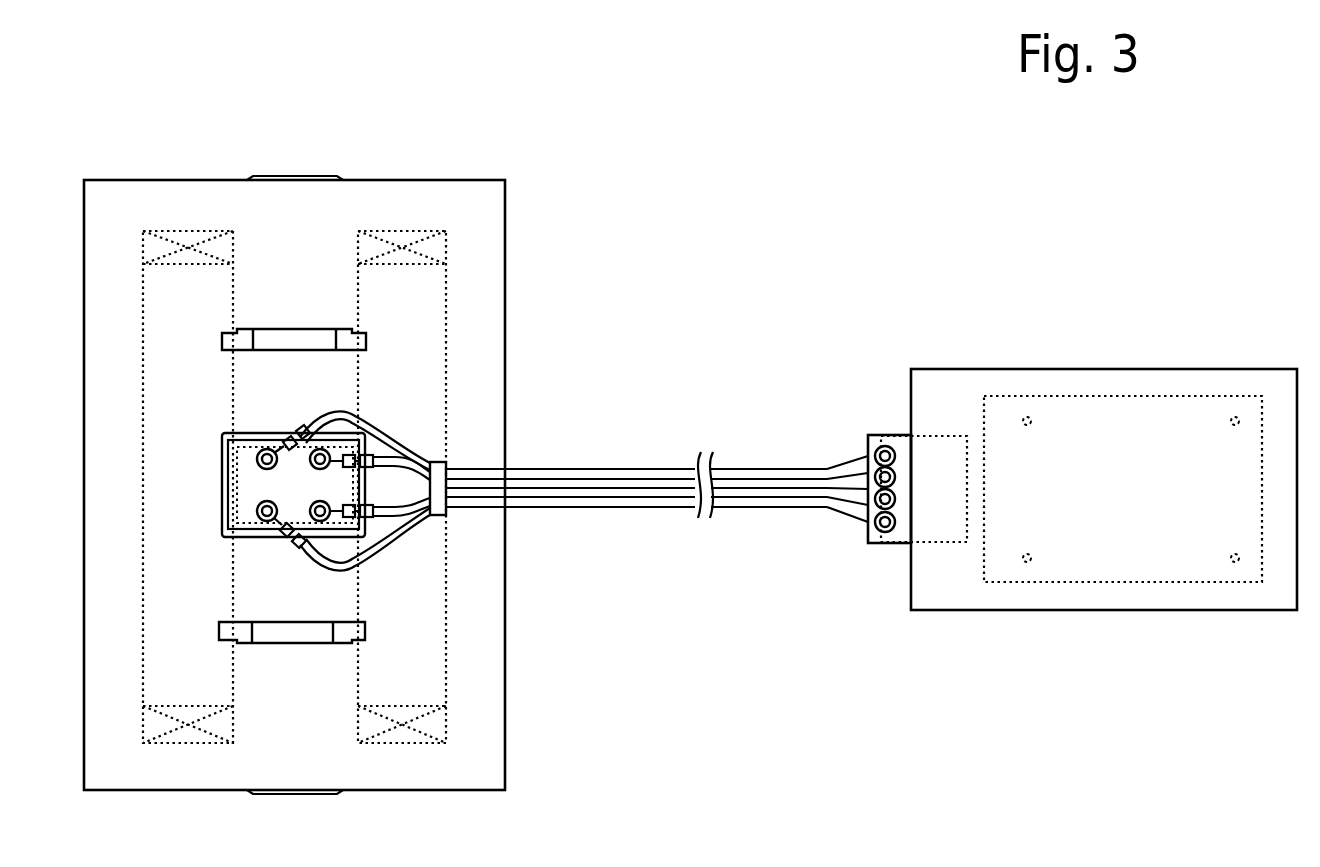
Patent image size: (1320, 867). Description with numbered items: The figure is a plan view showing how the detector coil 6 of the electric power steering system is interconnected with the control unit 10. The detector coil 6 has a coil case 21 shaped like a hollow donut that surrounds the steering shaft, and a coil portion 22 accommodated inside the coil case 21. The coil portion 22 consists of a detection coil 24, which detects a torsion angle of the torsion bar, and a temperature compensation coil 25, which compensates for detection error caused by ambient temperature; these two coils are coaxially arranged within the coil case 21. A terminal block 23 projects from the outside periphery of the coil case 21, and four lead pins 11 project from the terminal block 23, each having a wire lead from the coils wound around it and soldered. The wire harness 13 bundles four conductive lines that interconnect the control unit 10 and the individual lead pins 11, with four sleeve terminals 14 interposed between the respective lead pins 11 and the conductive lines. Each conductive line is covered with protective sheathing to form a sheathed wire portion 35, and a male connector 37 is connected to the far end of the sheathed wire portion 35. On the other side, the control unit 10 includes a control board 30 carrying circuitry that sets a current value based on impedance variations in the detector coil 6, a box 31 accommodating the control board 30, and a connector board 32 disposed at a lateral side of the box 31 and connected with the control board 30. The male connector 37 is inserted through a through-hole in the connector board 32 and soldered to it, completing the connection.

The detector coil 6 is at (427, 179).
The coil case 21 is at (137, 180).
The coil portion 22 is at (448, 291).
The detection coil 24 is at (143, 335).
The temperature compensation coil 25 is at (447, 337).
The terminal block 23 is at (222, 514).
The lead pins 11 is at (258, 462).
The sleeve terminals 14 is at (294, 427).
The wire harness 13 is at (586, 509).
The sheathed wire portion 35 is at (553, 495).
The control unit 10 is at (985, 368).
The control board 30 is at (1078, 396).
The box 31 is at (1160, 370).
The connector board 32 is at (893, 435).
The male connector 37 is at (885, 532).